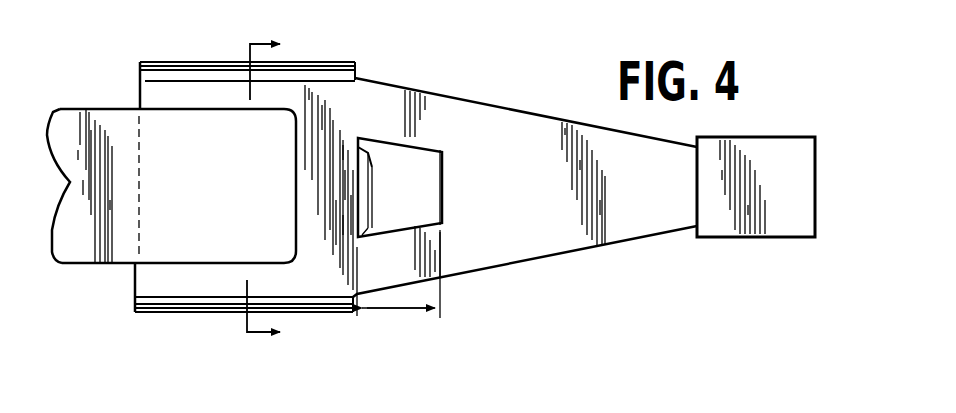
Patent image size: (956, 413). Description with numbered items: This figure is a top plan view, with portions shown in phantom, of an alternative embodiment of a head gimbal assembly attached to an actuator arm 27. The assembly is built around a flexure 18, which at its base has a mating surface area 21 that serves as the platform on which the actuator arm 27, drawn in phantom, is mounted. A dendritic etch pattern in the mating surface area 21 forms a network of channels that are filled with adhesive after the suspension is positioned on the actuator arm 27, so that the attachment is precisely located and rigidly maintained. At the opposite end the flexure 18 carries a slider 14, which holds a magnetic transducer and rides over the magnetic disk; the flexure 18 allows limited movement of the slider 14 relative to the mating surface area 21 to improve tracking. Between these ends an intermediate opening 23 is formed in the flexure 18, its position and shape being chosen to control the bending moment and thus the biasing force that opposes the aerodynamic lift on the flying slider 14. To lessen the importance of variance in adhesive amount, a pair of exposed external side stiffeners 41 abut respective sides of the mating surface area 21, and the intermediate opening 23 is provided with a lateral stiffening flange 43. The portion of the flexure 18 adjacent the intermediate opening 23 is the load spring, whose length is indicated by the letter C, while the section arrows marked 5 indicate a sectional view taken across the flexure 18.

The slider 14 is at (800, 194).
The flexure 18 is at (531, 243).
The mating surface area 21 is at (193, 88).
The intermediate opening 23 is at (433, 138).
The actuator arm 27 is at (78, 193).
The exposed external side stiffeners 41 is at (178, 62).
The lateral stiffening flange 43 is at (372, 167).
The section line 5 is at (280, 189).
The load spring length C is at (392, 310).